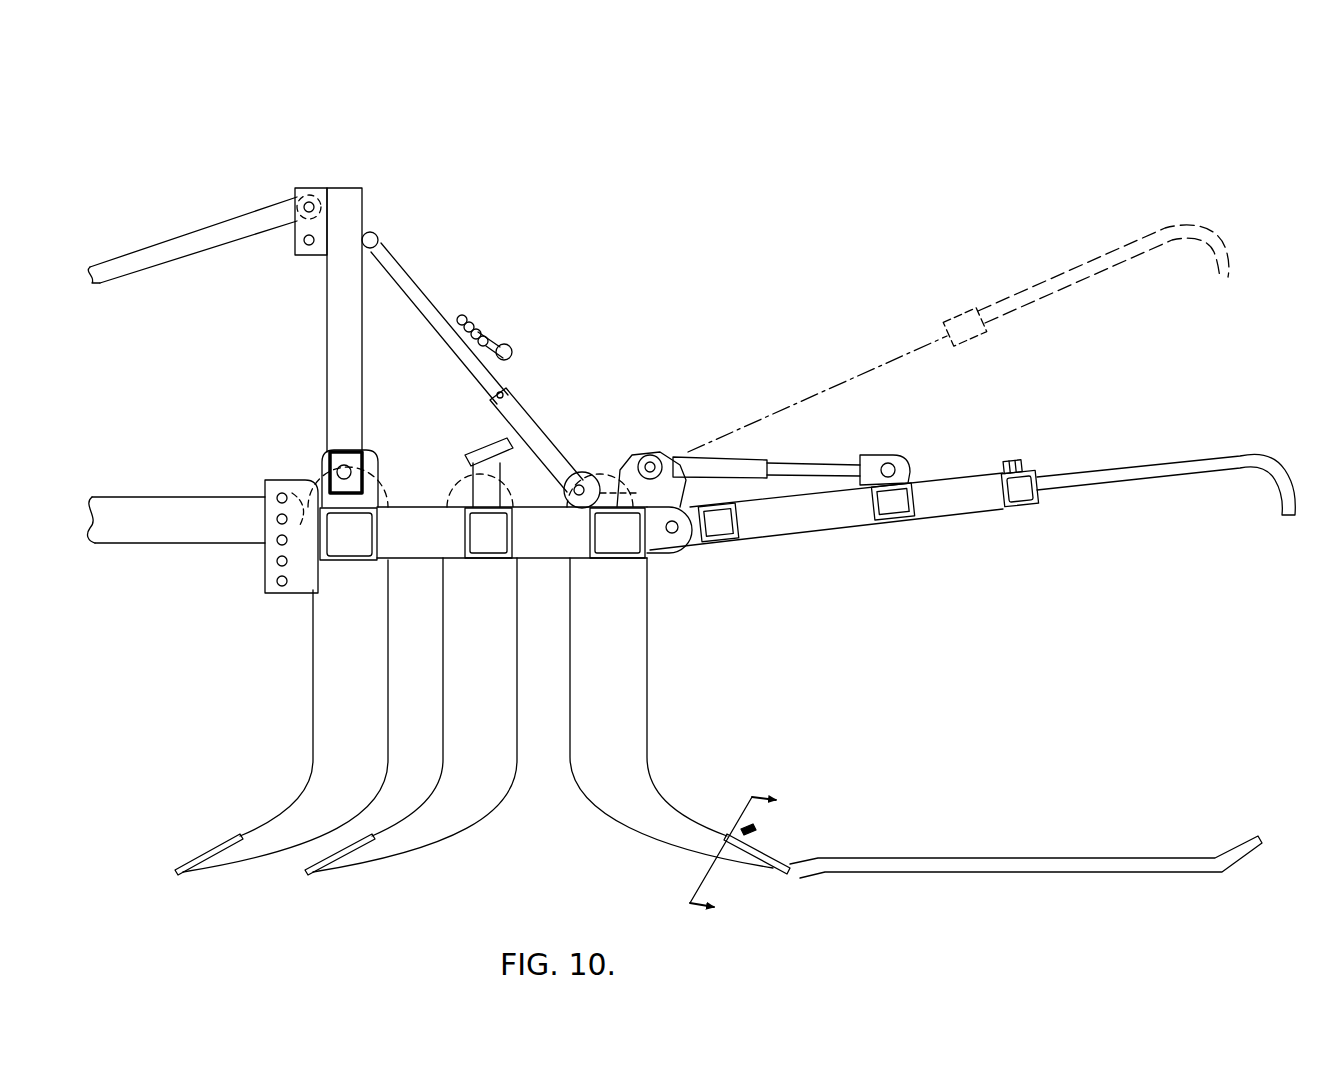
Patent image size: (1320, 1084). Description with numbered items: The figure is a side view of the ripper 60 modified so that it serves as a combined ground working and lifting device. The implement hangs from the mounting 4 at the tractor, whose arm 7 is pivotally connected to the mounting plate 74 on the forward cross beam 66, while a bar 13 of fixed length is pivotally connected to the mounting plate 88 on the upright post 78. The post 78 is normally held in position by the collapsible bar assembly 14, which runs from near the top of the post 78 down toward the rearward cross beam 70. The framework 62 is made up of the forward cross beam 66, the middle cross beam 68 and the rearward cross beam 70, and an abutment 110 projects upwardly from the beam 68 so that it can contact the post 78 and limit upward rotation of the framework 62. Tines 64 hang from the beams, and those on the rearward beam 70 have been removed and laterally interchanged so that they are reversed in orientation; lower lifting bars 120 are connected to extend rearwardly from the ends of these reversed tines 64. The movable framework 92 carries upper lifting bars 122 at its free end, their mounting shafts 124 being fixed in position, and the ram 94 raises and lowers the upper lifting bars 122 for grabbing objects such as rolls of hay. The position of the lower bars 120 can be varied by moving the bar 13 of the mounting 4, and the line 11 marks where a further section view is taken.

The mounting 4 is at (181, 168).
The arm 7 is at (142, 520).
The section line 11 is at (750, 861).
The bar 13 is at (149, 255).
The collapsible bar assembly 14 is at (432, 283).
The ripper 60 is at (604, 243).
The framework 62 is at (428, 504).
The tines 64 is at (615, 687).
The forward cross beam 66 is at (342, 563).
The cross beam 68 is at (481, 563).
The rearward cross beam 70 is at (605, 555).
The mounting plate 74 is at (263, 592).
The post 78 is at (337, 336).
The mounting plate 88 is at (318, 256).
The movable framework 92 is at (976, 481).
The ram 94 is at (777, 459).
The abutment 110 is at (492, 470).
The lifting bars 120 is at (1040, 856).
The upper lifting bars 122 is at (1217, 455).
The mounting shafts 124 is at (1028, 506).